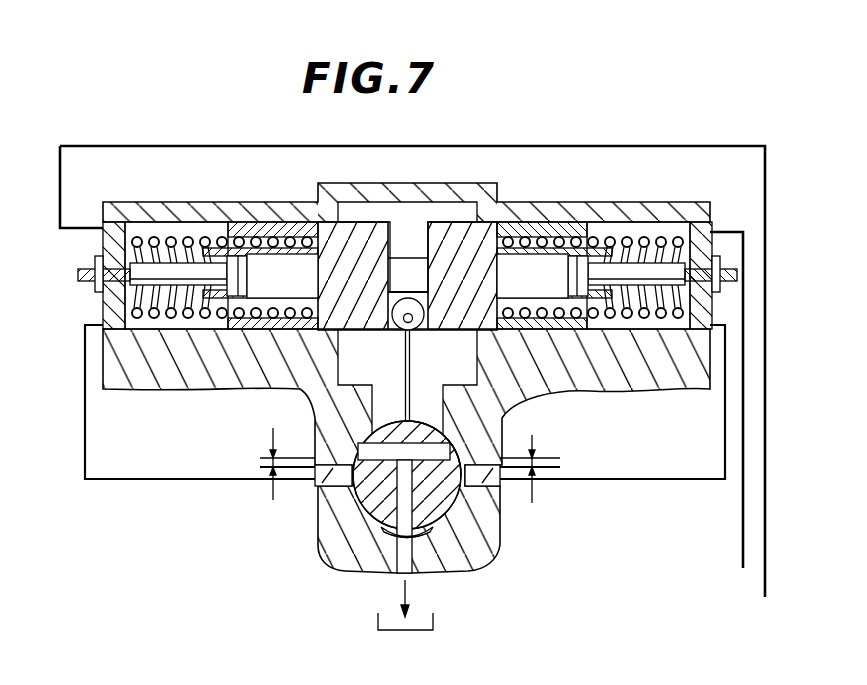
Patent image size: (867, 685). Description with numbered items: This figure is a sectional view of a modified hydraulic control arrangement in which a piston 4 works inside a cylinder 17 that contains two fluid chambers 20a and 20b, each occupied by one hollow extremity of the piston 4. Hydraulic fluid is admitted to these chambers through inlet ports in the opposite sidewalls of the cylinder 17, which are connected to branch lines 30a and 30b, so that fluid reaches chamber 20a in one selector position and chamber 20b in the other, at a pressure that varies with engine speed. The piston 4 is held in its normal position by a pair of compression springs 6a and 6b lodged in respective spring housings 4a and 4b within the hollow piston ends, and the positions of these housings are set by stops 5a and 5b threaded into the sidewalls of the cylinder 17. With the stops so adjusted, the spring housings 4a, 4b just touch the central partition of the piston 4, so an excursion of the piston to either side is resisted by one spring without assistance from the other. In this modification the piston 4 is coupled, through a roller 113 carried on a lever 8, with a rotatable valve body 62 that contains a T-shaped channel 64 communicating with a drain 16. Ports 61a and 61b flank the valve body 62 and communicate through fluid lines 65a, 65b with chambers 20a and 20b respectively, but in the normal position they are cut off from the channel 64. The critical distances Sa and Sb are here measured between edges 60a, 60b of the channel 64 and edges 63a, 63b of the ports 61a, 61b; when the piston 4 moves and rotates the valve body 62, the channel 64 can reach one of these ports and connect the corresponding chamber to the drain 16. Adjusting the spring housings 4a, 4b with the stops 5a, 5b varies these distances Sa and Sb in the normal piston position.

The piston 4 is at (447, 238).
The spring housing 4a is at (500, 258).
The spring housing 4b is at (308, 256).
The stop 5a is at (672, 276).
The stop 5b is at (112, 292).
The compression spring 6a is at (668, 263).
The compression spring 6b is at (175, 227).
The lever 8 is at (412, 367).
The drain 16 is at (387, 630).
The cylinder 17 is at (378, 192).
The fluid chamber 20a is at (602, 228).
The fluid chamber 20b is at (143, 240).
The branch line 30a is at (745, 422).
The branch line 30b is at (768, 472).
The edge of channel 60a is at (452, 458).
The edge of channel 60b is at (356, 445).
The port 61a is at (507, 490).
The port 61b is at (350, 488).
The rotatable valve body 62 is at (332, 560).
The edge of port 63a is at (473, 500).
The edge of port 63b is at (340, 500).
The T-shaped channel 64 is at (404, 446).
The fluid line 65a is at (665, 480).
The fluid line 65b is at (128, 479).
The roller 113 is at (393, 332).
The critical distance Sa is at (540, 462).
The critical distance Sb is at (268, 462).